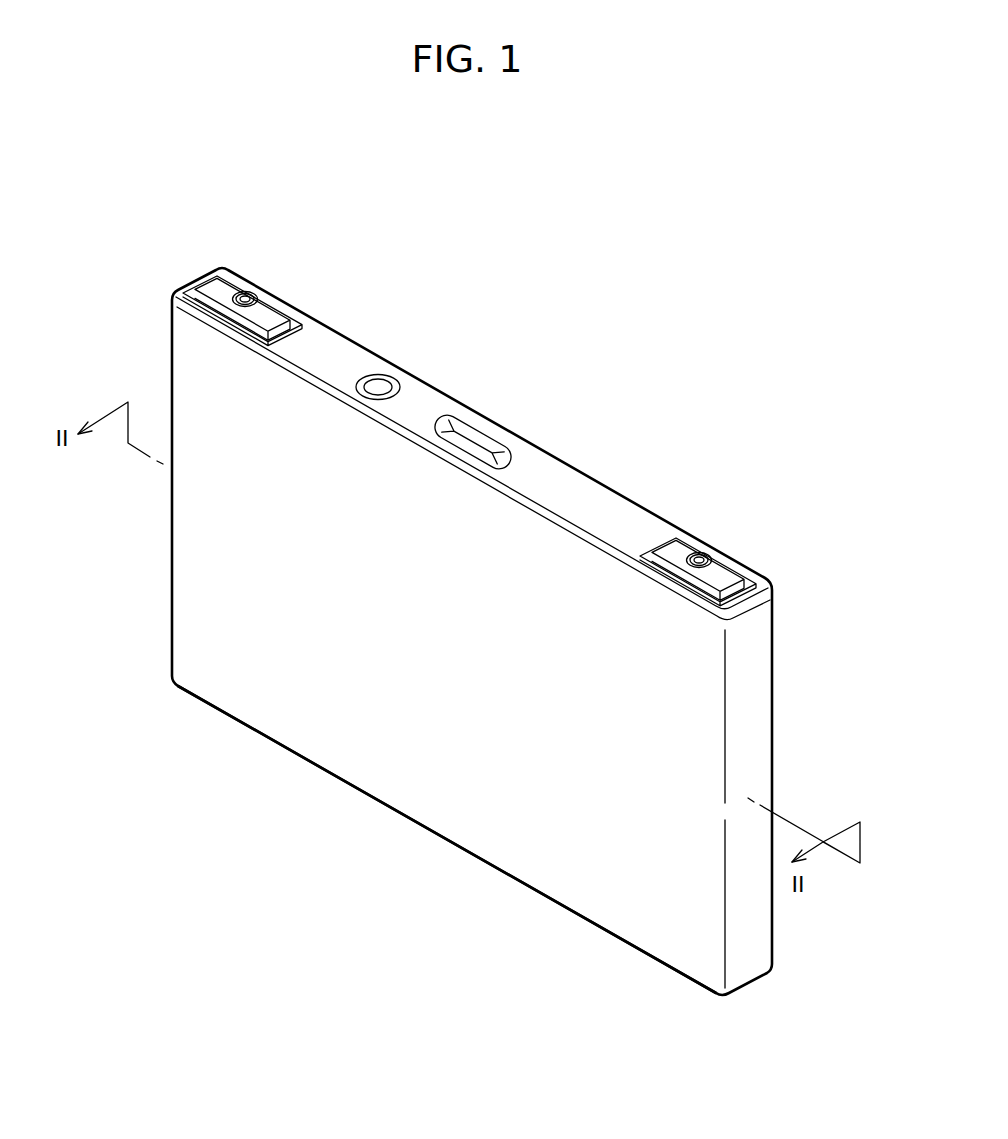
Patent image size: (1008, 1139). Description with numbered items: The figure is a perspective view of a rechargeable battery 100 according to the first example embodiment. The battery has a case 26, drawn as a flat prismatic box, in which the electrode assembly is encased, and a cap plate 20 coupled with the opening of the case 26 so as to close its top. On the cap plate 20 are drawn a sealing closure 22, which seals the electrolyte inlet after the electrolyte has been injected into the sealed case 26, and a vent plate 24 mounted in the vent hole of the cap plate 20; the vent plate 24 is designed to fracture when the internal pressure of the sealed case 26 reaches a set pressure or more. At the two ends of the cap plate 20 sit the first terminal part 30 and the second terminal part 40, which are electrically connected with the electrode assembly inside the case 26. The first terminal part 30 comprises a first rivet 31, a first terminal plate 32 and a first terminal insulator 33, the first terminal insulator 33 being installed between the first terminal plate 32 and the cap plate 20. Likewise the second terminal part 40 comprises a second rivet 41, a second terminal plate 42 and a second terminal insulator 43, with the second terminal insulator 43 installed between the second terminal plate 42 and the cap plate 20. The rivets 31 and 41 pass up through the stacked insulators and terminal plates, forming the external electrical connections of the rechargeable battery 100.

The rechargeable battery 100 is at (514, 219).
The cap plate 20 is at (568, 485).
The sealing closure 22 is at (380, 384).
The vent plate 24 is at (480, 438).
The case 26 is at (420, 795).
The first terminal part 30 is at (268, 225).
The first rivet 31 is at (247, 296).
The first terminal plate 32 is at (272, 304).
The first terminal insulator 33 is at (302, 318).
The second terminal part 40 is at (804, 522).
The second rivet 41 is at (700, 553).
The second terminal plate 42 is at (724, 566).
The second terminal insulator 43 is at (755, 578).